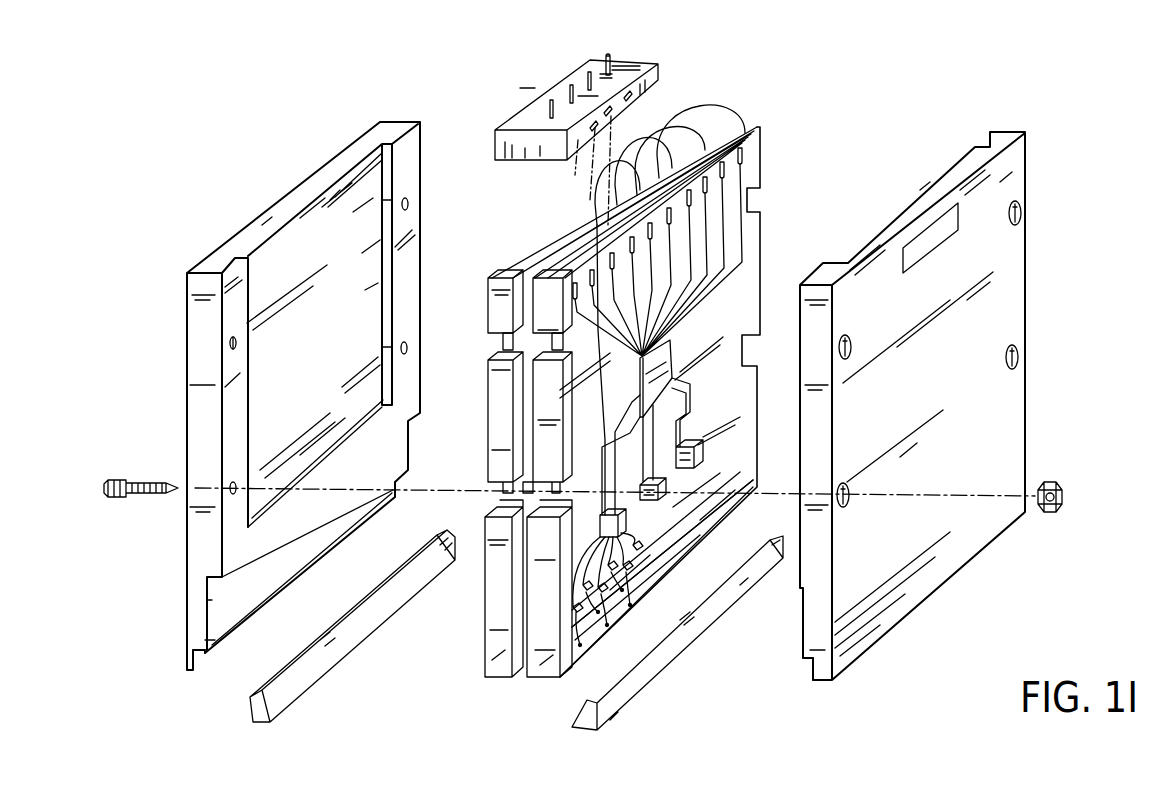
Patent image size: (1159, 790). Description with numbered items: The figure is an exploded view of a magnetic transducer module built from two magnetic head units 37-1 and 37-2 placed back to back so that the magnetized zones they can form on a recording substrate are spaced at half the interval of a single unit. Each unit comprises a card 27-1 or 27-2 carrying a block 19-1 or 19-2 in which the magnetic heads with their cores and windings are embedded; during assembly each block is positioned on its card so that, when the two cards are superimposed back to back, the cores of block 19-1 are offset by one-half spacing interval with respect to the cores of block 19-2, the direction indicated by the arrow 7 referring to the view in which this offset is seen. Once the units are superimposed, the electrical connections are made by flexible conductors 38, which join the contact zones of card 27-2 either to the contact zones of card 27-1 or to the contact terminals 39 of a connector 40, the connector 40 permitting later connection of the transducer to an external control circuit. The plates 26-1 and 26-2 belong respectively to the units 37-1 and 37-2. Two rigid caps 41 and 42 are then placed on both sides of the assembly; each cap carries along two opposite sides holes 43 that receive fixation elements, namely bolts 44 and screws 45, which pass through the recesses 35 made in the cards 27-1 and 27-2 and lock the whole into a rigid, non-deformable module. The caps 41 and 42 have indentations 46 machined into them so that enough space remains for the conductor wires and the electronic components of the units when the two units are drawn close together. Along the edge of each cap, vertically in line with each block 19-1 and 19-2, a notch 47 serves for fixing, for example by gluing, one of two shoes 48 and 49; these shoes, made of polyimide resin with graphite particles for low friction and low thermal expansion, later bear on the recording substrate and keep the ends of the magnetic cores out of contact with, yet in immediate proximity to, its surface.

The section line direction arrow 7 is at (525, 708).
The block 19-1 is at (490, 668).
The block 19-2 is at (710, 525).
The electrode plate 26-1 is at (510, 404).
The electrode plate 26-2 is at (505, 370).
The card 27-1 is at (520, 441).
The card 27-2 is at (755, 243).
The recesses 35 is at (485, 500).
The unit 37-1 is at (632, 392).
The unit 37-2 is at (949, 401).
The flexible conductors 38 is at (585, 182).
The contact terminals 39 is at (622, 130).
The connector 40 is at (555, 95).
The rigid cap 41 is at (185, 373).
The rigid cap 42 is at (1022, 255).
The holes 43 is at (238, 343).
The bolts 44 is at (146, 480).
The screws 45 is at (1064, 494).
The indentations 46 is at (322, 205).
The notch 47 is at (200, 662).
The shoe 48 is at (665, 657).
The shoe 49 is at (335, 657).